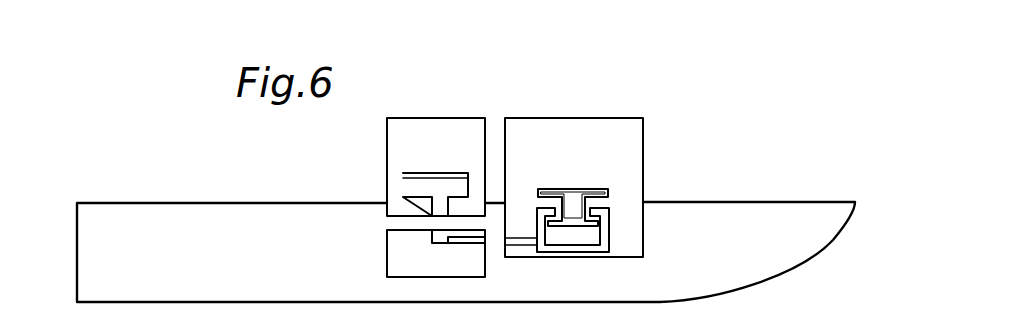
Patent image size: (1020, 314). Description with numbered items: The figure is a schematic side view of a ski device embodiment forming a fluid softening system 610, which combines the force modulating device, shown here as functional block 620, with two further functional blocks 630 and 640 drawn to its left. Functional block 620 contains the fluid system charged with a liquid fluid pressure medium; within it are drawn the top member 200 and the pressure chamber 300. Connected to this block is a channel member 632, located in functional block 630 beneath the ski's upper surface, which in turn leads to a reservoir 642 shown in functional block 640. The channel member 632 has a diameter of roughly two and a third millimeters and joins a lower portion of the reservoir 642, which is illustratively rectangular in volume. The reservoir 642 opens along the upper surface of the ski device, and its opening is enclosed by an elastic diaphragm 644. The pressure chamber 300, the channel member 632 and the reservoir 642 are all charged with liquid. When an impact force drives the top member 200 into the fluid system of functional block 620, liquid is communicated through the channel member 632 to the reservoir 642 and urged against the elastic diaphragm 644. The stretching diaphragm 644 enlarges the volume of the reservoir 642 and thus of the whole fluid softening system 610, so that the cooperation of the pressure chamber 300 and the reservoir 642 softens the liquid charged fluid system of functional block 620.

The fluid softening system 610 is at (732, 137).
The functional block 620 is at (593, 118).
The functional block 640 is at (436, 118).
The reservoir 642 is at (403, 186).
The elastic diaphragm 644 is at (403, 176).
The functional block 630 is at (387, 255).
The channel member 632 is at (470, 248).
The top member 200 is at (570, 186).
The pressure chamber 300 is at (572, 235).